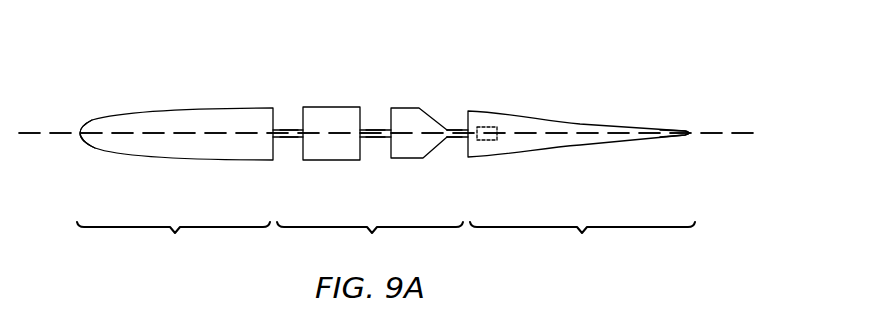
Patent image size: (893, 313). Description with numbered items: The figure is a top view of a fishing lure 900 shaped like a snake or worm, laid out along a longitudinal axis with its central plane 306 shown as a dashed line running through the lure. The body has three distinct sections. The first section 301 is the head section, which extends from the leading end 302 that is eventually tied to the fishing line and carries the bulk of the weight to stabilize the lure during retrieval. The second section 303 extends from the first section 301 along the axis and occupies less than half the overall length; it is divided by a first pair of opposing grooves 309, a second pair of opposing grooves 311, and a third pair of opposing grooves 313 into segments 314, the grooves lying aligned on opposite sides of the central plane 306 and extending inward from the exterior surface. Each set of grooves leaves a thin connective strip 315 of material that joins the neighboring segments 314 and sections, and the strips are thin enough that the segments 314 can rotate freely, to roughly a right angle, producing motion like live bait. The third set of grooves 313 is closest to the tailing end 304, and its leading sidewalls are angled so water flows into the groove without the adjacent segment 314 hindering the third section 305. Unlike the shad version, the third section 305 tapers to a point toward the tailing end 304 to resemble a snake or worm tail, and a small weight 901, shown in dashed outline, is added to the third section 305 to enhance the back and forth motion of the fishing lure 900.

The fishing lure 900 is at (253, 73).
The first section 301 is at (175, 184).
The leading end 302 is at (81, 130).
The second section 303 is at (370, 241).
The tailing end 304 is at (694, 137).
The third section 305 is at (581, 185).
The central plane 306 is at (729, 133).
The first pair of opposing grooves 309 is at (289, 156).
The second pair of opposing grooves 311 is at (376, 158).
The third pair of opposing grooves 313 is at (453, 158).
The segment 314 is at (327, 107).
The connective strip 315 is at (286, 130).
The small weight 901 is at (488, 127).